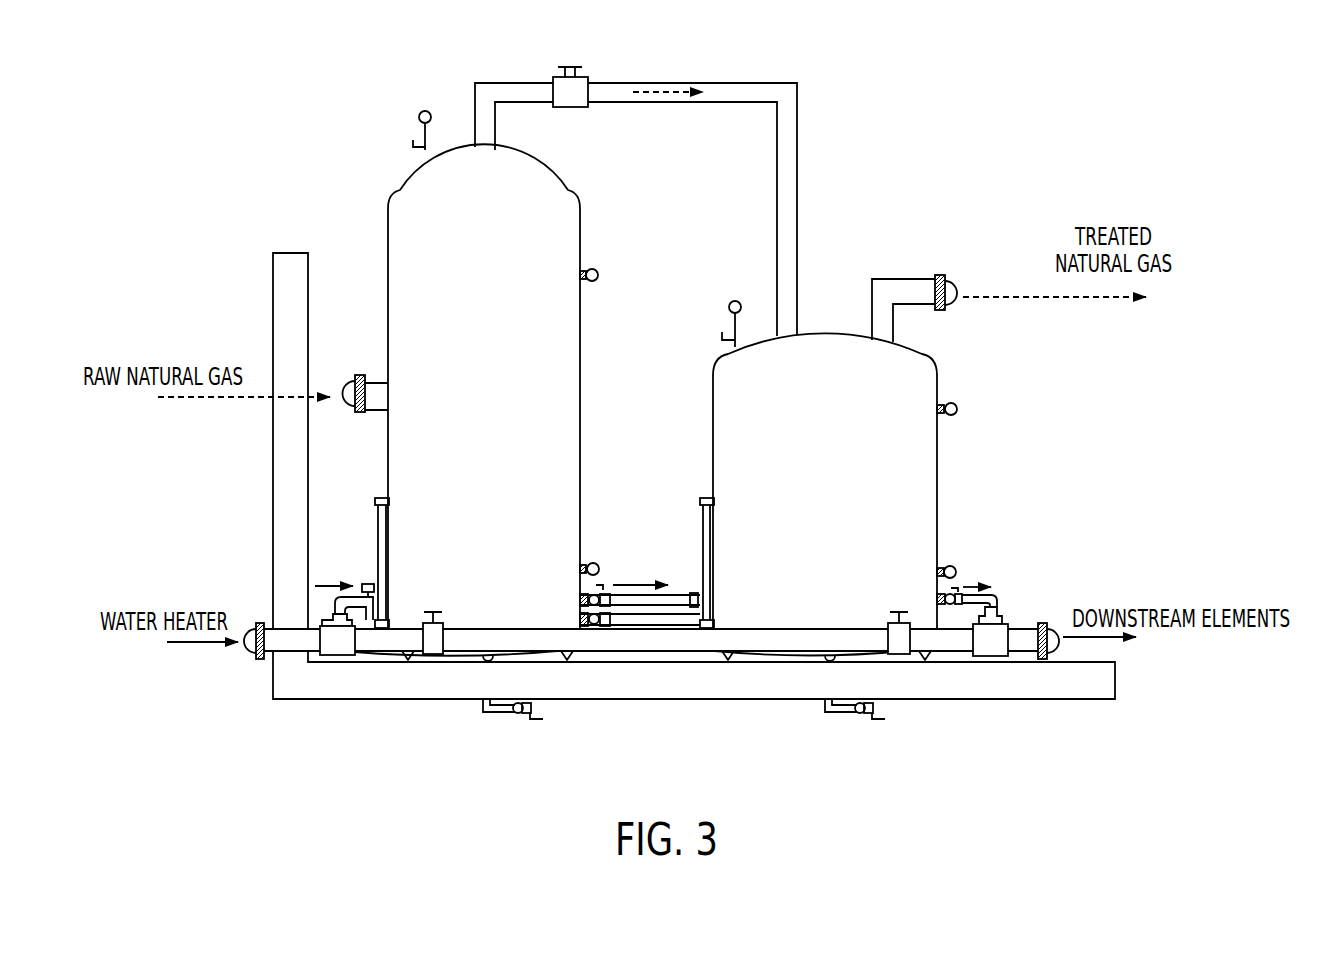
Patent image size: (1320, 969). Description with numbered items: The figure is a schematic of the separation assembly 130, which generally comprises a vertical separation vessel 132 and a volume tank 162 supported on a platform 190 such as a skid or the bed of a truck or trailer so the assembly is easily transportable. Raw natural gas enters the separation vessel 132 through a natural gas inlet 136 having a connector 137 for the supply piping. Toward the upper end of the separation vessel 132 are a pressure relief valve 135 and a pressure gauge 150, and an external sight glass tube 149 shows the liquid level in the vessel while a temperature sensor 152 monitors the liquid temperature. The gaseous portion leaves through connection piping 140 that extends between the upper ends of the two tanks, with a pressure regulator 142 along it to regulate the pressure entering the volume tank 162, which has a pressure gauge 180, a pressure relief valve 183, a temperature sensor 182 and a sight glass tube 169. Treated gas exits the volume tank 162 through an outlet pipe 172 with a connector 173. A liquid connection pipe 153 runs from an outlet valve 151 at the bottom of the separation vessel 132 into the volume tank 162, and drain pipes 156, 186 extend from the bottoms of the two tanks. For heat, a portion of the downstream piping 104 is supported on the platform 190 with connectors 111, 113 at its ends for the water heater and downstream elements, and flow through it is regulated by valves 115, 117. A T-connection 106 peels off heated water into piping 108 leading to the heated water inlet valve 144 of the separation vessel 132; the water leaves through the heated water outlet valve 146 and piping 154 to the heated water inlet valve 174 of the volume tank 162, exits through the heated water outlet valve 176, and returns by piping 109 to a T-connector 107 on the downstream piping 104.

The downstream piping 104 is at (281, 652).
The T-connection 106 is at (335, 655).
The T-connector 107 is at (990, 652).
The piping 108 is at (334, 603).
The piping 109 is at (995, 595).
The connector 111 is at (250, 655).
The connector 113 is at (1043, 623).
The valve 115 is at (432, 652).
The valve 117 is at (900, 652).
The separation assembly 130 is at (950, 192).
The separation vessel 132 is at (388, 195).
The pressure relief valve 135 is at (414, 146).
The natural gas inlet 136 is at (372, 383).
The connector 137 is at (356, 408).
The connection piping 140 is at (508, 82).
The pressure regulator 142 is at (585, 77).
The heated water inlet valve 144 is at (364, 584).
The heated water outlet valve 146 is at (580, 598).
The sight glass tube 149 is at (376, 517).
The pressure gauge 150 is at (600, 274).
The outlet valve 151 is at (595, 628).
The temperature sensor 152 is at (595, 563).
The liquid connection pipe 153 is at (641, 626).
The piping 154 is at (686, 603).
The drain pipe 156 is at (492, 714).
The volume tank 162 is at (957, 492).
The sight glass tube 169 is at (700, 520).
The outlet pipe 172 is at (880, 279).
The connector 173 is at (948, 284).
The heated water inlet valve 174 is at (692, 593).
The heated water outlet valve 176 is at (945, 597).
The pressure gauge 180 is at (957, 405).
The temperature sensor 182 is at (951, 566).
The pressure relief valve 183 is at (724, 336).
The drain pipe 186 is at (827, 714).
The platform 190 is at (1087, 700).